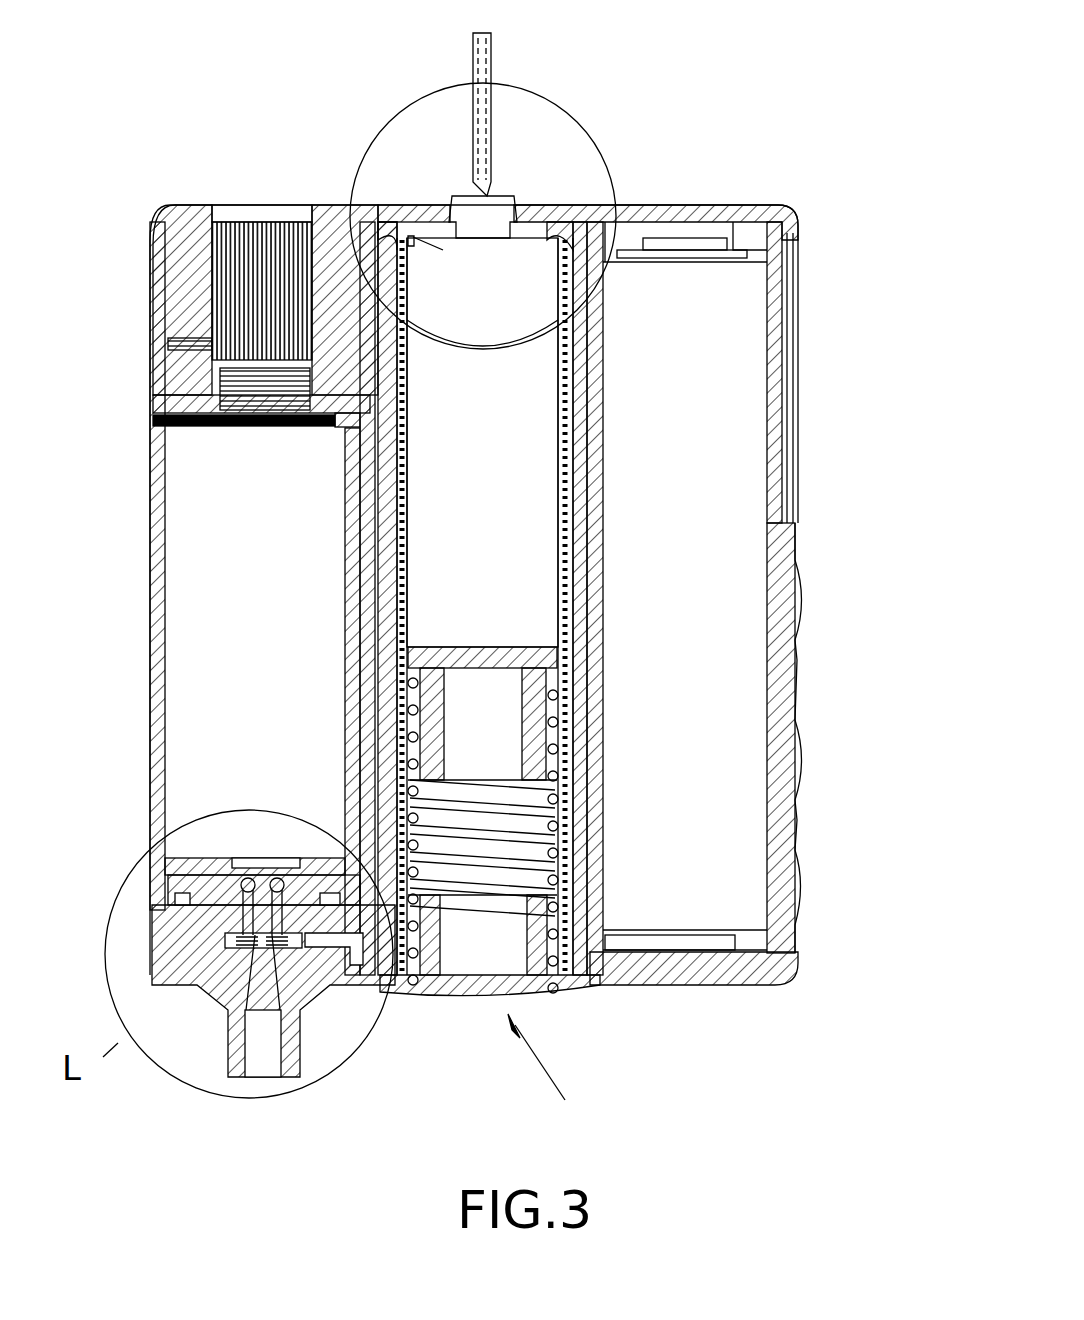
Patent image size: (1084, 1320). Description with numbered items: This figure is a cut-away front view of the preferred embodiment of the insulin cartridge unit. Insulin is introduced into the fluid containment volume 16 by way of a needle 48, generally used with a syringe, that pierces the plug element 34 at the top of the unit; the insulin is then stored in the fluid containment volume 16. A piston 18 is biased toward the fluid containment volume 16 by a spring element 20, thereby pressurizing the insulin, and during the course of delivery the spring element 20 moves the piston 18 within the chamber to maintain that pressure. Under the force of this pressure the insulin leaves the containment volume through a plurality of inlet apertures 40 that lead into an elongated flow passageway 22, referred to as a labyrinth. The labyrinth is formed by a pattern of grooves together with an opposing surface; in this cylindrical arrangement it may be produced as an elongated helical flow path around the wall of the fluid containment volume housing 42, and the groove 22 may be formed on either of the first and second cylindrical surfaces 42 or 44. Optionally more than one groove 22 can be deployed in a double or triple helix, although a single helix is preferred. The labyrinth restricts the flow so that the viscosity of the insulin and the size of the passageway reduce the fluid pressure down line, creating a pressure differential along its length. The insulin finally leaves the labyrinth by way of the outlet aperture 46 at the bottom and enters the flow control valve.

The fluid containment volume 16 is at (505, 420).
The piston 18 is at (605, 658).
The spring element 20 is at (600, 828).
The elongated flow passageway 22 is at (405, 280).
The plug element 34 is at (483, 208).
The inlet apertures 40 is at (443, 250).
The fluid containment volume housing 42 is at (387, 236).
The second cylindrical surface 44 is at (350, 207).
The outlet aperture 46 is at (378, 982).
The needle 48 is at (505, 45).